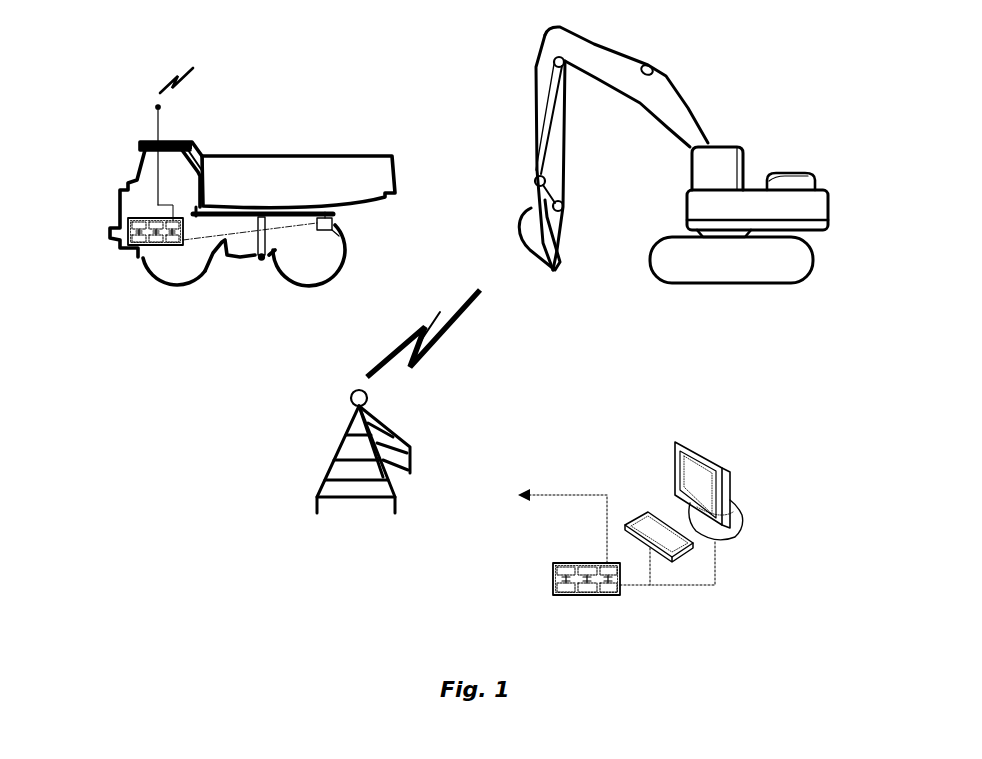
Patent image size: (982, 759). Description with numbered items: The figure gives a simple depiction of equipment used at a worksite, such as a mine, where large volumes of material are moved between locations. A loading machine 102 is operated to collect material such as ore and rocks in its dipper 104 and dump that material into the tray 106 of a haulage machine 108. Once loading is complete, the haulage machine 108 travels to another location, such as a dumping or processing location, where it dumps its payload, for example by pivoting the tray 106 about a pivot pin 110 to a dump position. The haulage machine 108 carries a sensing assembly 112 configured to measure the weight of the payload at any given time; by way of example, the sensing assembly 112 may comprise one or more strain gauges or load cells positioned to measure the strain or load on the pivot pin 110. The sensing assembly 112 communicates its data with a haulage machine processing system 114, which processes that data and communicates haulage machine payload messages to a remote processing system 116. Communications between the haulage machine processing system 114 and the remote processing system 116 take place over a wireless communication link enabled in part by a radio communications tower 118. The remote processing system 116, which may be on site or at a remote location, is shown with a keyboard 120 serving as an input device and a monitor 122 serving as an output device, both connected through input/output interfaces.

The loading machine 102 is at (773, 88).
The dipper 104 is at (520, 219).
The tray 106 is at (290, 156).
The haulage machine 108 is at (121, 107).
The pivot pin 110 is at (333, 216).
The sensing assembly 112 is at (338, 238).
The haulage machine processing system 114 is at (163, 245).
The remote processing system 116 is at (587, 597).
The radio communications tower 118 is at (316, 438).
The keyboard 120 is at (647, 517).
The monitor 122 is at (740, 503).